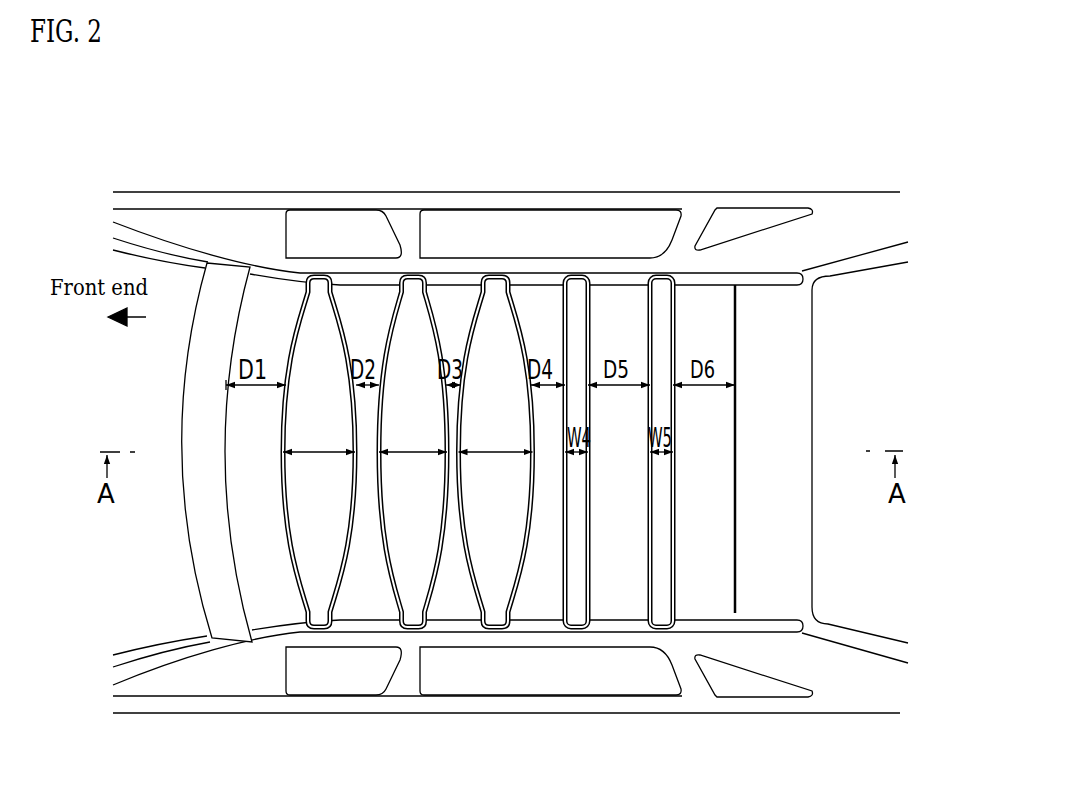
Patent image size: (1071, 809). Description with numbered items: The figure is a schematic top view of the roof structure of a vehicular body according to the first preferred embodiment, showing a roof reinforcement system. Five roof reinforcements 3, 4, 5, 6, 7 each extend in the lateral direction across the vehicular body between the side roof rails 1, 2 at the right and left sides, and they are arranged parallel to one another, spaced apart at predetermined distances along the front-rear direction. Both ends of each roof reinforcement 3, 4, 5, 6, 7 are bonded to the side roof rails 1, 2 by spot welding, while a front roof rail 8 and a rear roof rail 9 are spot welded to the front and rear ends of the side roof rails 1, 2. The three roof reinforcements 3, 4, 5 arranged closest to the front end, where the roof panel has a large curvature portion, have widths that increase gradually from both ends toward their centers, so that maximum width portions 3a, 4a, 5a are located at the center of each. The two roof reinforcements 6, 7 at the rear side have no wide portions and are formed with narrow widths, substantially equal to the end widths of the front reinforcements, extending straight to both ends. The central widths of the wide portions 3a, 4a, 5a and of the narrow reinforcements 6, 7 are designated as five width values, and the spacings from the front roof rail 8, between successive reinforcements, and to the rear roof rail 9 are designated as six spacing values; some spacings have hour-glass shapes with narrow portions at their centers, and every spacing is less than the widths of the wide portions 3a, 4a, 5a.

The side roof rail 1 is at (288, 274).
The side roof rail 2 is at (292, 632).
The roof reinforcement 3 is at (305, 334).
The wide portion of roof reinforcement 3a is at (320, 458).
The roof reinforcement 4 is at (402, 333).
The wide portion of roof reinforcement 4a is at (408, 460).
The roof reinforcement 5 is at (484, 326).
The wide portion of roof reinforcement 5a is at (493, 460).
The roof reinforcement 6 is at (566, 323).
The roof reinforcement 7 is at (651, 323).
The front roof rail 8 is at (186, 381).
The rear roof rail 9 is at (747, 358).